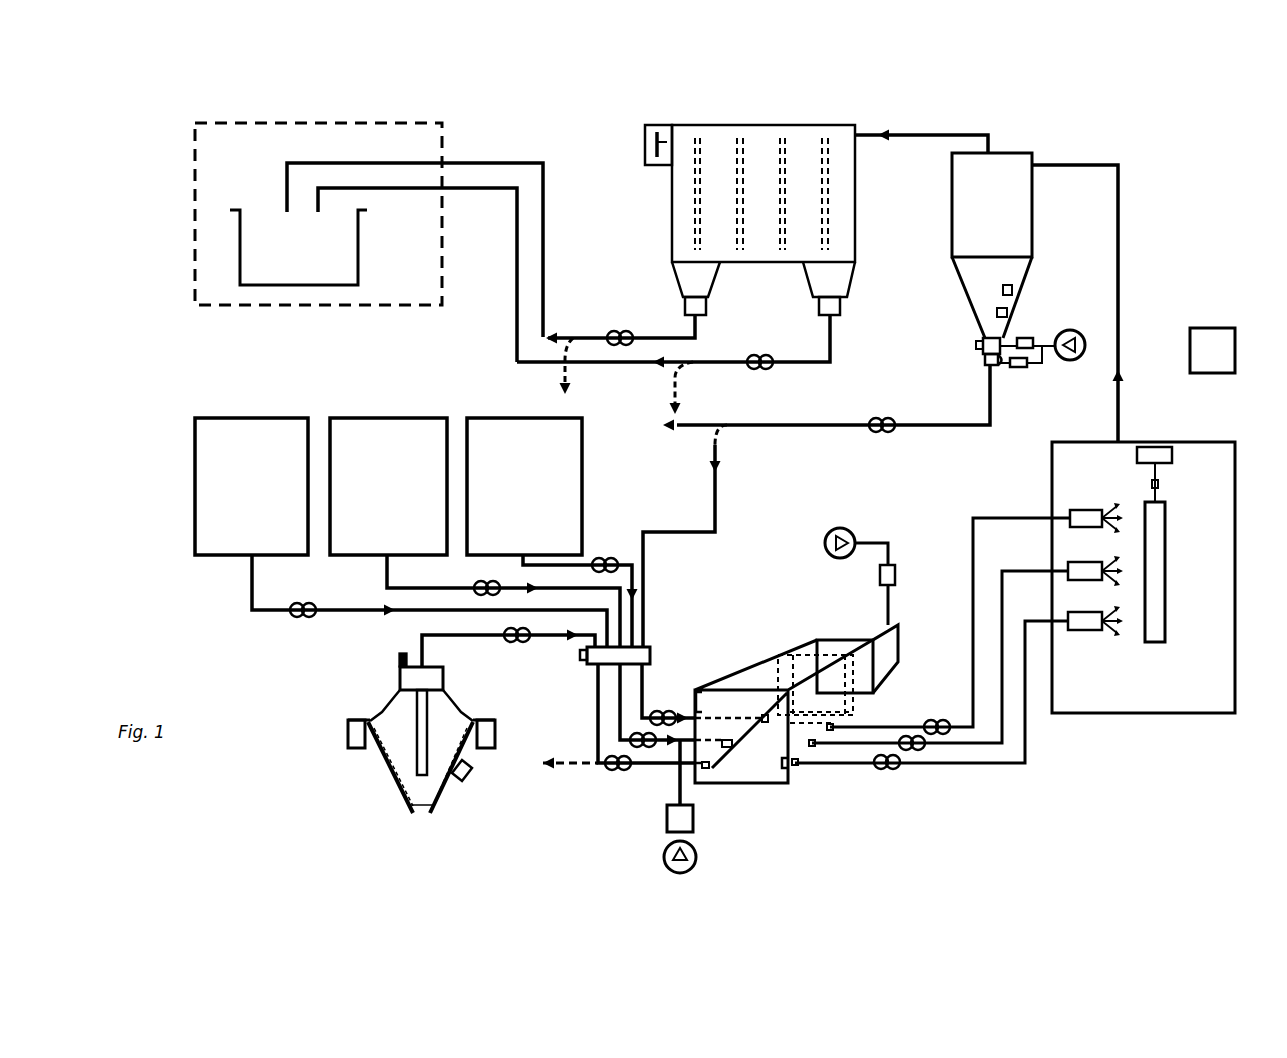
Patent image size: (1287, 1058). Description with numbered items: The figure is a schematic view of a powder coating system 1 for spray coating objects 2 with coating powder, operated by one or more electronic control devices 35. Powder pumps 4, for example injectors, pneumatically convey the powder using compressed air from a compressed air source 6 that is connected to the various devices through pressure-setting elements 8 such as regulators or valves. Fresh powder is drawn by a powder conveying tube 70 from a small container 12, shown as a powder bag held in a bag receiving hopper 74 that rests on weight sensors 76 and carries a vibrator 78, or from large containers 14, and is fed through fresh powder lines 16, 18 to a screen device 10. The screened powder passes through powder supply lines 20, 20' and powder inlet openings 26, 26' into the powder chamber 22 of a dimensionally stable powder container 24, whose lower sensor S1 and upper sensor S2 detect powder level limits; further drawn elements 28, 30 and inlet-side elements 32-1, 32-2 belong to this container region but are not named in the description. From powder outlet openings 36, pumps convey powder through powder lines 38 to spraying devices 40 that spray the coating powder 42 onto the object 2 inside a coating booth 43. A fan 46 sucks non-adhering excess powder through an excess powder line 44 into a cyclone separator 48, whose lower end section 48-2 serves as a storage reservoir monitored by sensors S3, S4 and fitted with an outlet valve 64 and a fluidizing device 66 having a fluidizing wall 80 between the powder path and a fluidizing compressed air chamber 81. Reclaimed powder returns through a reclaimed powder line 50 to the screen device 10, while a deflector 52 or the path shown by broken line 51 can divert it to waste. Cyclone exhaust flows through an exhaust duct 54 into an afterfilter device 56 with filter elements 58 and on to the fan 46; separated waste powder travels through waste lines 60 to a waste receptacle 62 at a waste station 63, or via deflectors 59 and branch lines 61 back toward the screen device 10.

The powder coating system 1 is at (1222, 147).
The object 2 is at (1162, 595).
The powder pump 4 is at (622, 335).
The compressed air source 6 is at (1075, 330).
The pressure-setting element 8 is at (1027, 338).
The screen device 10 is at (650, 645).
The small container 12 is at (388, 713).
The large container 14 is at (258, 418).
The fresh powder line 16 is at (558, 640).
The fresh powder line 18 is at (387, 580).
The powder supply line 20 is at (627, 751).
The powder supply line 20' is at (644, 806).
The powder chamber 22 is at (745, 700).
The powder container 24 is at (720, 700).
The powder inlet opening 26 is at (760, 711).
The powder inlet opening 26' is at (758, 818).
The drain line 28 is at (578, 770).
The treatment trough 30 is at (803, 650).
The inlet 32-1 is at (744, 829).
The inlet 32-2 is at (739, 790).
The electronic control device 35 is at (1220, 330).
The powder outlet opening 36 is at (836, 725).
The powder line 38 is at (1002, 516).
The spraying device 40 is at (1088, 512).
The coating powder 42 is at (1115, 505).
The coating booth 43 is at (1235, 460).
The excess powder line 44 is at (1120, 328).
The fan 46 is at (660, 130).
The cyclone separator 48 is at (1015, 153).
The lower end section 48-2 is at (972, 283).
The reclaimed powder line 50 is at (806, 428).
The broken line 51 is at (683, 430).
The deflector 52 is at (722, 440).
The exhaust duct 54 is at (915, 133).
The afterfilter device 56 is at (770, 128).
The filter element 58 is at (700, 140).
The deflector 59 is at (572, 335).
The waste line 60 is at (487, 160).
The branch line 61 is at (560, 374).
The waste receptacle 62 is at (255, 285).
The waste station 63 is at (355, 122).
The outlet valve 64 is at (996, 362).
The fluidizing device 66 is at (985, 360).
The powder conveying tube 70 is at (415, 730).
The bag receiving hopper 74 is at (400, 795).
The weight sensor 76 is at (352, 748).
The vibrator 78 is at (465, 778).
The fluidizing wall 80 is at (978, 341).
The fluidizing compressed air chamber 81 is at (983, 346).
The sensor S1 is at (782, 764).
The sensor S2 is at (700, 690).
The sensor S3 is at (1012, 287).
The sensor S4 is at (1007, 310).